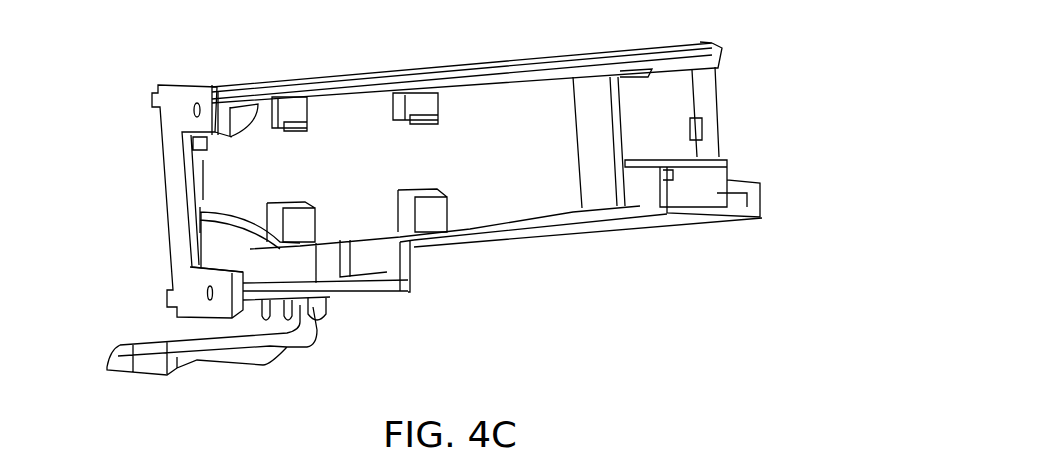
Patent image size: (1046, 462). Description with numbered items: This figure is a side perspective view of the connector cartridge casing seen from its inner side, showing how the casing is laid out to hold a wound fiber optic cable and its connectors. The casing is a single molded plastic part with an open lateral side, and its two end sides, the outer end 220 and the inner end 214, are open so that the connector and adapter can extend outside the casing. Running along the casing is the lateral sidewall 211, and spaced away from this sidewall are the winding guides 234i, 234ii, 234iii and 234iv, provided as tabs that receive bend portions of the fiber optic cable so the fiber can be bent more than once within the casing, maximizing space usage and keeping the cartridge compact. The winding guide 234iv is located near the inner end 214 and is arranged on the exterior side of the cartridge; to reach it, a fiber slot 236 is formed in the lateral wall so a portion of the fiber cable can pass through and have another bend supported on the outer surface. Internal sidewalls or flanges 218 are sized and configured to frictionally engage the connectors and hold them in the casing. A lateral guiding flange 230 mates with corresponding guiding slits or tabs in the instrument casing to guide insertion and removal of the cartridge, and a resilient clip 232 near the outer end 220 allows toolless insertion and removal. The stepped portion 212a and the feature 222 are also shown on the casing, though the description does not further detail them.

The lateral sidewall 211 is at (357, 120).
The stepped floor portion 212a is at (450, 243).
The inner end 214 is at (785, 164).
The internal sidewalls and/or flanges 218 is at (708, 167).
The outer end 220 is at (135, 171).
The curved guide surface 222 is at (218, 252).
The lateral guiding flange 230 is at (685, 228).
The resilient clip 232 is at (157, 360).
The winding guide 234i is at (422, 107).
The winding guide 234ii is at (290, 115).
The winding guide 234iii is at (427, 217).
The winding guide 234iv is at (295, 225).
The fiber slot 236 is at (595, 195).